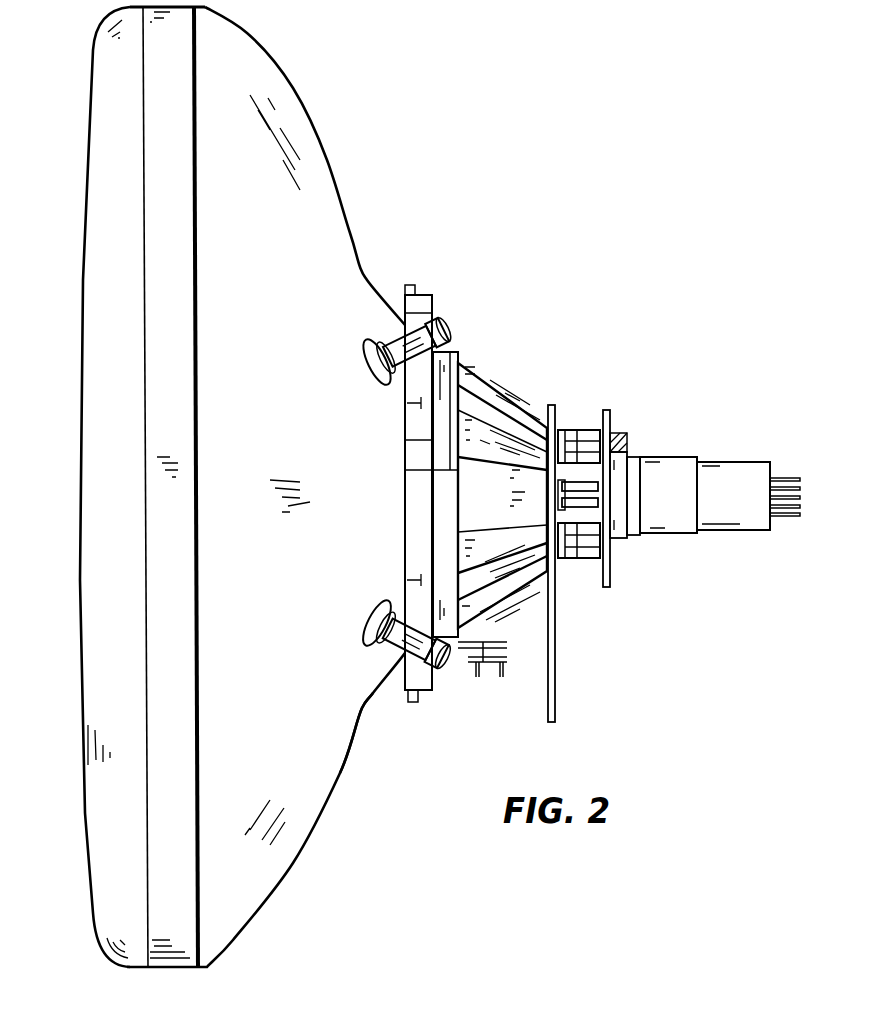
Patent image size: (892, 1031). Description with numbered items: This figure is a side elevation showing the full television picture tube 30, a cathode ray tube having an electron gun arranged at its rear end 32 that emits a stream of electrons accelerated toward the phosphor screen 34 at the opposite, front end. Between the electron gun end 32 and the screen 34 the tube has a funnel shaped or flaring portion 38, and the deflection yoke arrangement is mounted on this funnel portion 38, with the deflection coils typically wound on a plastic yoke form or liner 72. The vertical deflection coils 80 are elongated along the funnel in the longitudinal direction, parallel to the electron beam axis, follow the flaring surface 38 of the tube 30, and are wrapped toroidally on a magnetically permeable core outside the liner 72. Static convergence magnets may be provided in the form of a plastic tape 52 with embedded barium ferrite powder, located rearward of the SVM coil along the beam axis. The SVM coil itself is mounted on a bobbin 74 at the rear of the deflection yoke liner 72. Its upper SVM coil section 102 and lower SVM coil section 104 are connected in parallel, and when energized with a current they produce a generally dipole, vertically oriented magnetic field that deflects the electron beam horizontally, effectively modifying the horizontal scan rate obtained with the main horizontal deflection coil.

The television picture tube 30 is at (286, 108).
The rear end 32 is at (753, 468).
The phosphor screen 34 is at (84, 232).
The funnel shaped portion 38 is at (373, 697).
The plastic tape with embedded barium ferrite powder 52 is at (667, 523).
The yoke form or liner 72 is at (408, 453).
The bobbin 74 is at (612, 413).
The vertical deflection coils 80 is at (503, 390).
The upper SVM coil section 102 is at (577, 427).
The lower SVM coil section 104 is at (576, 560).